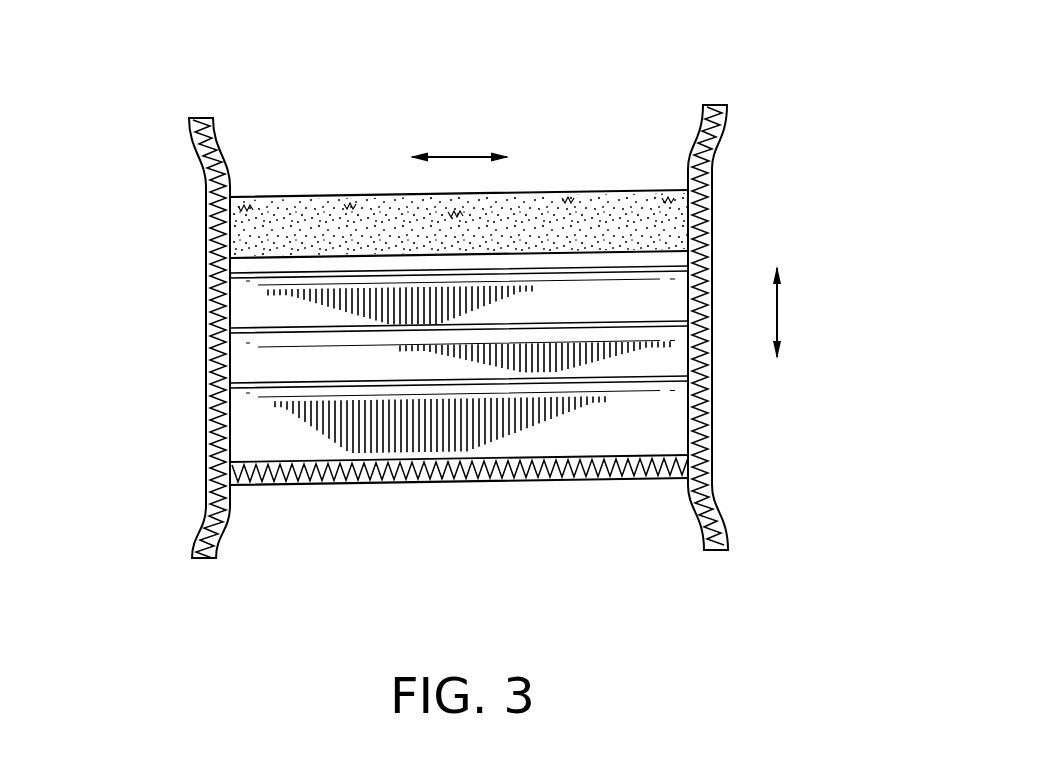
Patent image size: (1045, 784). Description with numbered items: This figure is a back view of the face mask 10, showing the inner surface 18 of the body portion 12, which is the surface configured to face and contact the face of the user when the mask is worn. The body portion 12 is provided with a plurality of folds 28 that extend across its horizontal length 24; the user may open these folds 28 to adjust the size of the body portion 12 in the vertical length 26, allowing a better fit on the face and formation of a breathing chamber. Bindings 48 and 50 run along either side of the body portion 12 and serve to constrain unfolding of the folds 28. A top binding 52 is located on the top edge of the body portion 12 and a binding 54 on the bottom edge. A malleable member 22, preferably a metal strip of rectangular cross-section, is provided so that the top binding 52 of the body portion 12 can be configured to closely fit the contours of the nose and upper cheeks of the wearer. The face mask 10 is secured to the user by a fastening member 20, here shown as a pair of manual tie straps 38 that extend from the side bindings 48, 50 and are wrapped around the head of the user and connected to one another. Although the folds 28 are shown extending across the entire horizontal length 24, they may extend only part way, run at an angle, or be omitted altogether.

The face mask 10 is at (292, 78).
The body portion 12 is at (528, 420).
The inner surface 18 is at (285, 433).
The fastening member 20 is at (695, 107).
The malleable member 22 is at (242, 228).
The horizontal length 24 is at (465, 157).
The vertical length 26 is at (778, 312).
The folds 28 is at (250, 278).
The manual tie straps 38 is at (190, 124).
The binding 48 is at (206, 425).
The binding 50 is at (708, 205).
The top binding 52 is at (572, 196).
The binding 54 is at (373, 485).